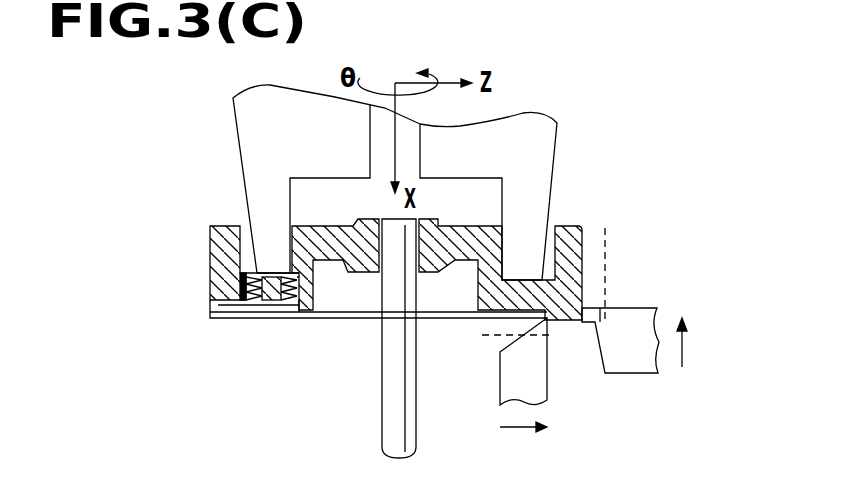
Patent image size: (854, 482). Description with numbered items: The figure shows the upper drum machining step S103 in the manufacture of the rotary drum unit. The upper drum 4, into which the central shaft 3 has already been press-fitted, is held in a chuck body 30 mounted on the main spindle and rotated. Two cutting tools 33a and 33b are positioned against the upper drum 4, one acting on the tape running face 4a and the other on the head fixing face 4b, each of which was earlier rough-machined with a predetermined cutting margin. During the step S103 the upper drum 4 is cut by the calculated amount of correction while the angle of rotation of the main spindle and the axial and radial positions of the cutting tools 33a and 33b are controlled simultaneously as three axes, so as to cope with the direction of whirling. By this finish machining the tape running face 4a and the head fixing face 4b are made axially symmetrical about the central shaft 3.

The central shaft 3 is at (382, 375).
The upper drum 4 is at (357, 262).
The tape running face 4a is at (605, 248).
The head fixing face 4b is at (487, 338).
The chuck body 30 is at (530, 143).
The cutting tool 33a is at (628, 357).
The cutting tool 33b is at (540, 372).
The upper drum machining step S103 is at (628, 190).